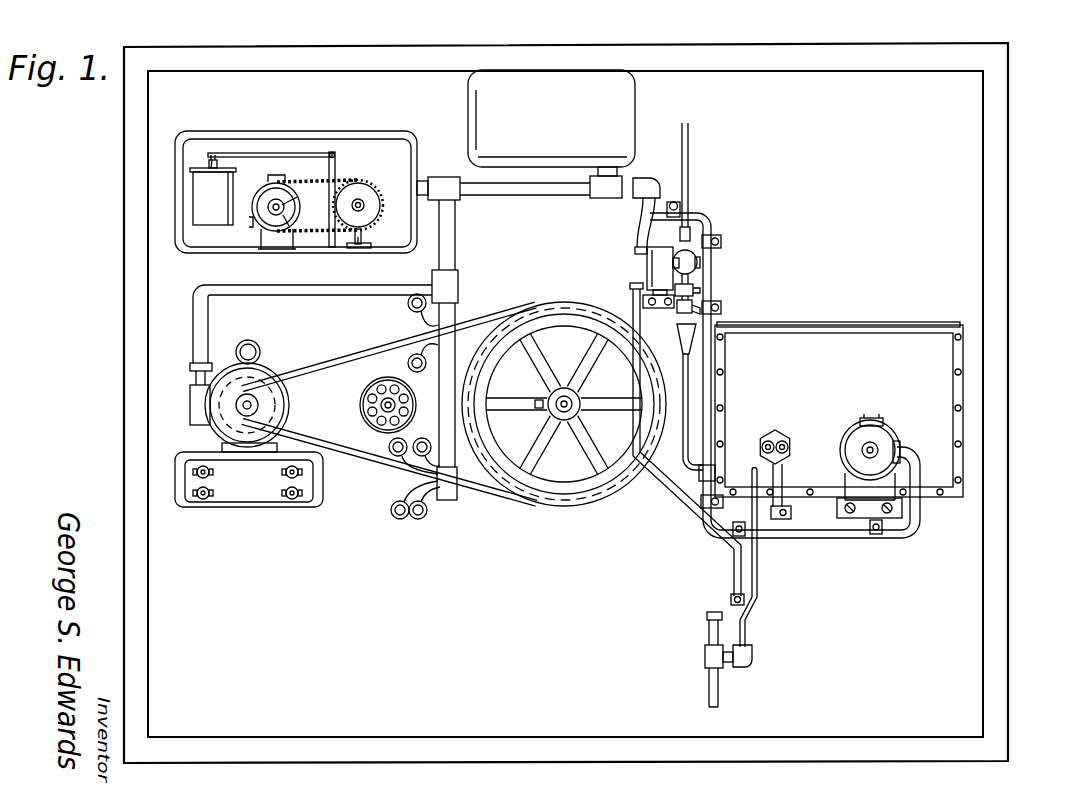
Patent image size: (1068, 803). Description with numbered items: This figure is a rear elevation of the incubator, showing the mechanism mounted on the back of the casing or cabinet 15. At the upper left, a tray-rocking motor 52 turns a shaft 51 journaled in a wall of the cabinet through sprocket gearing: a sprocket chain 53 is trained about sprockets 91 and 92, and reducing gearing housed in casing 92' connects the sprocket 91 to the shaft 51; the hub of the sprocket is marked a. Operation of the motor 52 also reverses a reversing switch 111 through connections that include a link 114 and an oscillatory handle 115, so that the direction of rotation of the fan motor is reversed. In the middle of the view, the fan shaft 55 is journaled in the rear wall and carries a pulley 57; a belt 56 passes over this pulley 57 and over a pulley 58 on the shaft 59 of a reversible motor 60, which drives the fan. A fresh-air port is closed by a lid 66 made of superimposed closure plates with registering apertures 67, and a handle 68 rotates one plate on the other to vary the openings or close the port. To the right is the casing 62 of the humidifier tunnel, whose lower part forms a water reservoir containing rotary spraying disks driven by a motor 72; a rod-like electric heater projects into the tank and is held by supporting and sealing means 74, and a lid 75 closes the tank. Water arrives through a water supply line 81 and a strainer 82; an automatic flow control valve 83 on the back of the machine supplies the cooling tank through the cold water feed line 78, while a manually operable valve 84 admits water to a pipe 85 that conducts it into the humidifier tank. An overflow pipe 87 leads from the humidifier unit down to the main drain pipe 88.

The casing or cabinet 15 is at (1005, 501).
The shaft 51 is at (350, 186).
The motor 52 is at (272, 231).
The sprocket chain 53 is at (294, 196).
The fan shaft 55 is at (565, 398).
The belt 56 is at (485, 486).
The pulley 57 is at (547, 503).
The pulley 58 is at (283, 393).
The motor shaft 59 is at (262, 405).
The reversible motor 60 is at (266, 372).
The casing 62 is at (945, 415).
The lid 66 is at (403, 420).
The registering apertures 67 is at (420, 386).
The handle 68 is at (371, 413).
The motor 72 is at (882, 440).
The supporting and sealing means 74 is at (777, 431).
The lid 75 is at (902, 323).
The cold water feed line 78 is at (728, 565).
The water supply line 81 is at (689, 163).
The strainer 82 is at (697, 256).
The automatic flow control valve 83 is at (647, 269).
The manually operable valve 84 is at (693, 300).
The pipe 85 is at (683, 347).
The overflow pipe 87 is at (758, 595).
The main drain pipe 88 is at (719, 702).
The sprocket 91 is at (373, 192).
The sprocket 92 is at (299, 246).
The casing 92' is at (379, 257).
The sprocket hub a is at (366, 204).
The reversing switch 111 is at (193, 200).
The link 114 is at (299, 154).
The oscillatory handle 115 is at (205, 160).